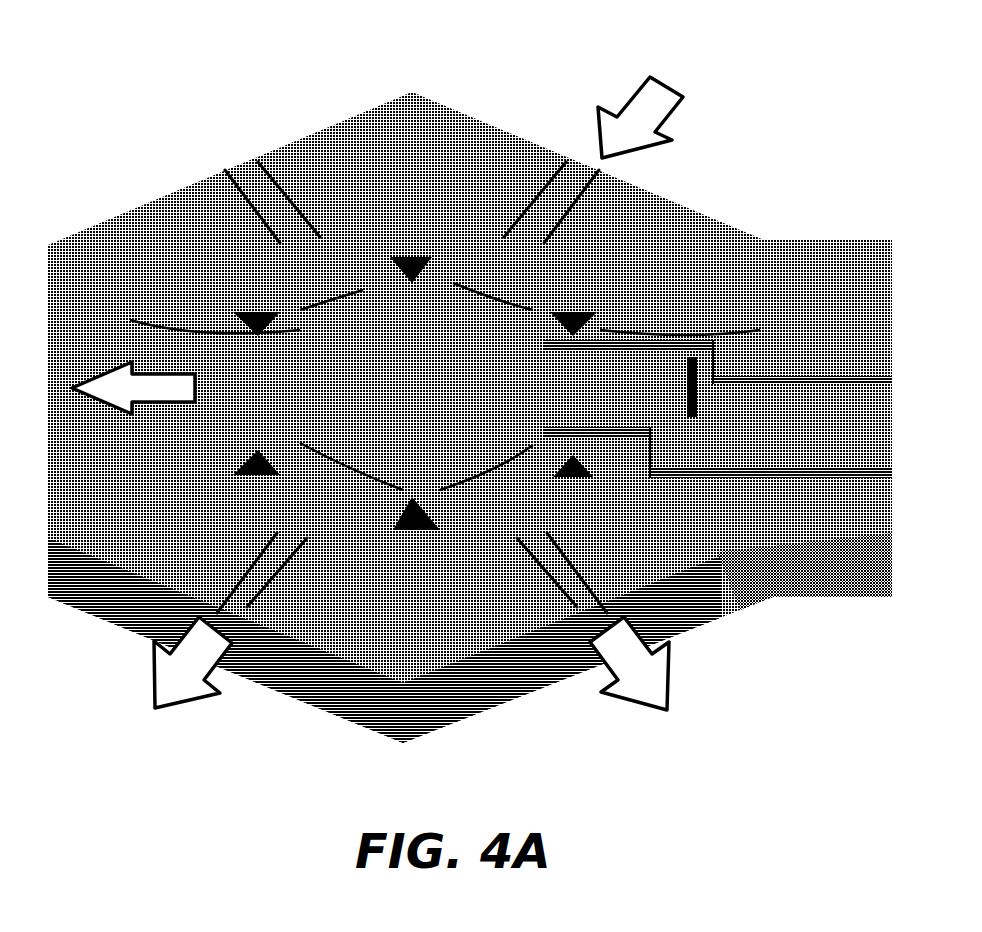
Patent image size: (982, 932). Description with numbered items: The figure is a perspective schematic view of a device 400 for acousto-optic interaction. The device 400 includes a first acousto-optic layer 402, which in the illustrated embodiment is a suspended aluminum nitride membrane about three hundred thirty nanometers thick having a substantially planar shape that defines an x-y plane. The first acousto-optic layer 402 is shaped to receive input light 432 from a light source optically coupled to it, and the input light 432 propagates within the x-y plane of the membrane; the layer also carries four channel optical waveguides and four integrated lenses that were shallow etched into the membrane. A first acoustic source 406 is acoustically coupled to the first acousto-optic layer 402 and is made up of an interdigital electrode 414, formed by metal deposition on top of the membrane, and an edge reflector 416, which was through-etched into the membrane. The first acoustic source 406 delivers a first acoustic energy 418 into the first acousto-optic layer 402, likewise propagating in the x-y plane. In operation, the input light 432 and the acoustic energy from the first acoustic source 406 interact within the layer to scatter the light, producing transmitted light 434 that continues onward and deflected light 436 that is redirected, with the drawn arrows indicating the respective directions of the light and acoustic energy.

The device 400 is at (460, 376).
The first acousto-optic layer 402 is at (305, 650).
The first acoustic source 406 is at (628, 446).
The interdigital electrode 414 is at (618, 334).
The edge reflector 416 is at (695, 378).
The first acoustic energy 418 is at (155, 345).
The input light 432 is at (692, 108).
The transmitted light 434 is at (135, 666).
The deflected light 436 is at (684, 668).